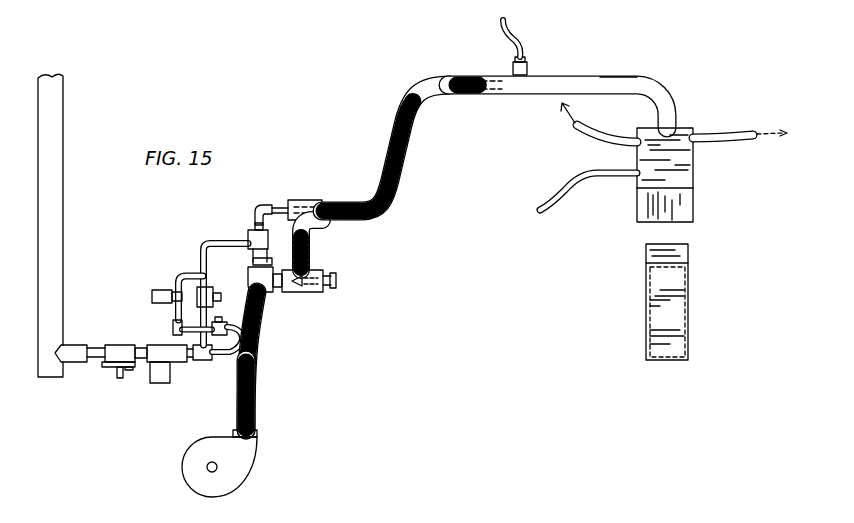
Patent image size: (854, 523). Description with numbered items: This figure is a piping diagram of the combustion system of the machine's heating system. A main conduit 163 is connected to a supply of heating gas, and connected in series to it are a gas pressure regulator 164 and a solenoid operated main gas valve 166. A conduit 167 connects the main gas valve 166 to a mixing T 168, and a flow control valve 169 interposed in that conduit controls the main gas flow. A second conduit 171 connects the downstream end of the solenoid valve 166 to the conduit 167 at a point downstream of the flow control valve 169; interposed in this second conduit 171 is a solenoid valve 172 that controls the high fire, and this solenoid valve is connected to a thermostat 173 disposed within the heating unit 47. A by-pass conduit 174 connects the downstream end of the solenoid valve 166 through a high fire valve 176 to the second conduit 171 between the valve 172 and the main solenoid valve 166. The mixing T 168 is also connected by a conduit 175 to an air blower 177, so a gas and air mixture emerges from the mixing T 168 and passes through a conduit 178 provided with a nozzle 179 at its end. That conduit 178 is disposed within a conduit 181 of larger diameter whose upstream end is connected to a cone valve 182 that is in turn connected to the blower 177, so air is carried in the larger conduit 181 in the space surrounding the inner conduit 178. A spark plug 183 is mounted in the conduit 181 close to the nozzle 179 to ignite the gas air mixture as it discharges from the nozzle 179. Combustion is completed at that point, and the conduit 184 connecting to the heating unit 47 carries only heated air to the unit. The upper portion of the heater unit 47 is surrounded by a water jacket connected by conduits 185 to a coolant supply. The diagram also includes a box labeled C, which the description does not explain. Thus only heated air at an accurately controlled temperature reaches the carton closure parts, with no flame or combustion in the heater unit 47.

The main conduit 163 is at (50, 112).
The gas pressure regulator 164 is at (115, 345).
The solenoid operated main gas valve 166 is at (170, 362).
The conduit 167 is at (200, 250).
The mixing T 168 is at (253, 233).
The flow control valve 169 is at (213, 287).
The second conduit 171 is at (176, 314).
The solenoid valve 172 is at (162, 288).
The thermostat 173 is at (618, 177).
The by-pass conduit 174 is at (257, 347).
The conduit 175 is at (255, 378).
The high fire valve 176 is at (263, 318).
The air blower 177 is at (233, 472).
The conduit 178 is at (407, 157).
The nozzle 179 is at (492, 73).
The conduit 181 is at (372, 210).
The cone valve 182 is at (323, 288).
The spark plug 183 is at (527, 56).
The conduit 184 is at (637, 75).
The conduits 185 is at (730, 132).
The heating unit 47 is at (693, 175).
The control box C is at (688, 310).